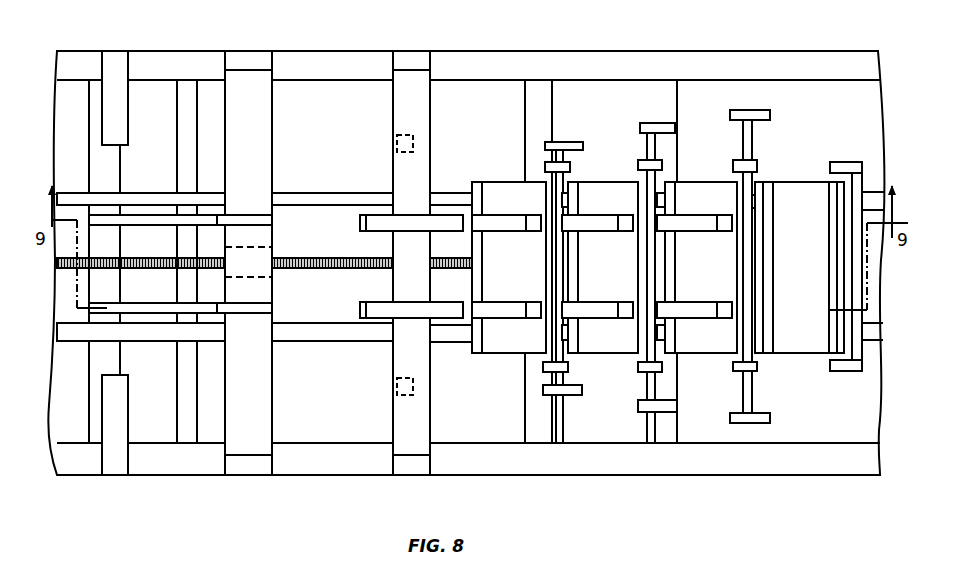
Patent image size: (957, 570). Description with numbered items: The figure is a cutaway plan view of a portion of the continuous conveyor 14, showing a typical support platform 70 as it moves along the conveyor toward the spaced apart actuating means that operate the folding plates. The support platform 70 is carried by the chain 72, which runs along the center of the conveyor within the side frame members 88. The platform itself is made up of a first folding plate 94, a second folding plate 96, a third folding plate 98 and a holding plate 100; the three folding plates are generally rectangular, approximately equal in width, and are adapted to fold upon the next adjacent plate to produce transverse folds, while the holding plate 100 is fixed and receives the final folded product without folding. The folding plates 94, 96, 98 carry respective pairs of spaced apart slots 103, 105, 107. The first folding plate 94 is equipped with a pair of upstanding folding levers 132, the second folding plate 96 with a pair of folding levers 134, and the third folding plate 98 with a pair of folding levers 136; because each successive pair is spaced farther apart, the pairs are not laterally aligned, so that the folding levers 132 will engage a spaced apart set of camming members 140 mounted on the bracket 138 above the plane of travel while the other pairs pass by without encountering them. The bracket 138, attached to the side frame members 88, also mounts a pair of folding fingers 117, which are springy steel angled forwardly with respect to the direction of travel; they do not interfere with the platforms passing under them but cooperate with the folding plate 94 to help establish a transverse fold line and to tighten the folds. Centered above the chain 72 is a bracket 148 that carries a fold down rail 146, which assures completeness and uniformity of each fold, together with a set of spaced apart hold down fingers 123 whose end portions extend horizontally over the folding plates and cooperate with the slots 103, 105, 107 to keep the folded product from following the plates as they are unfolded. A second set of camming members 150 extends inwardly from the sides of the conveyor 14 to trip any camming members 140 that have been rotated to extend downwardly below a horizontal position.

The continuous conveyor 14 is at (466, 254).
The support platform 70 is at (790, 172).
The chain 72 is at (322, 258).
The frame 88 is at (836, 58).
The first folding plate 94 is at (509, 267).
The second folding plate 96 is at (600, 267).
The third folding plate 98 is at (697, 267).
The holding plate 100 is at (821, 275).
The slots 103 is at (523, 194).
The slots 105 is at (621, 195).
The slots 107 is at (721, 195).
The folding fingers 117 is at (360, 222).
The hold down fingers 123 is at (250, 215).
The folding levers 132 is at (572, 142).
The folding levers 134 is at (670, 131).
The folding levers 136 is at (765, 105).
The bracket 138 is at (430, 118).
The camming members 140 is at (396, 140).
The fold down rail 146 is at (225, 250).
The bracket 148 is at (274, 132).
The camming members 150 is at (115, 62).